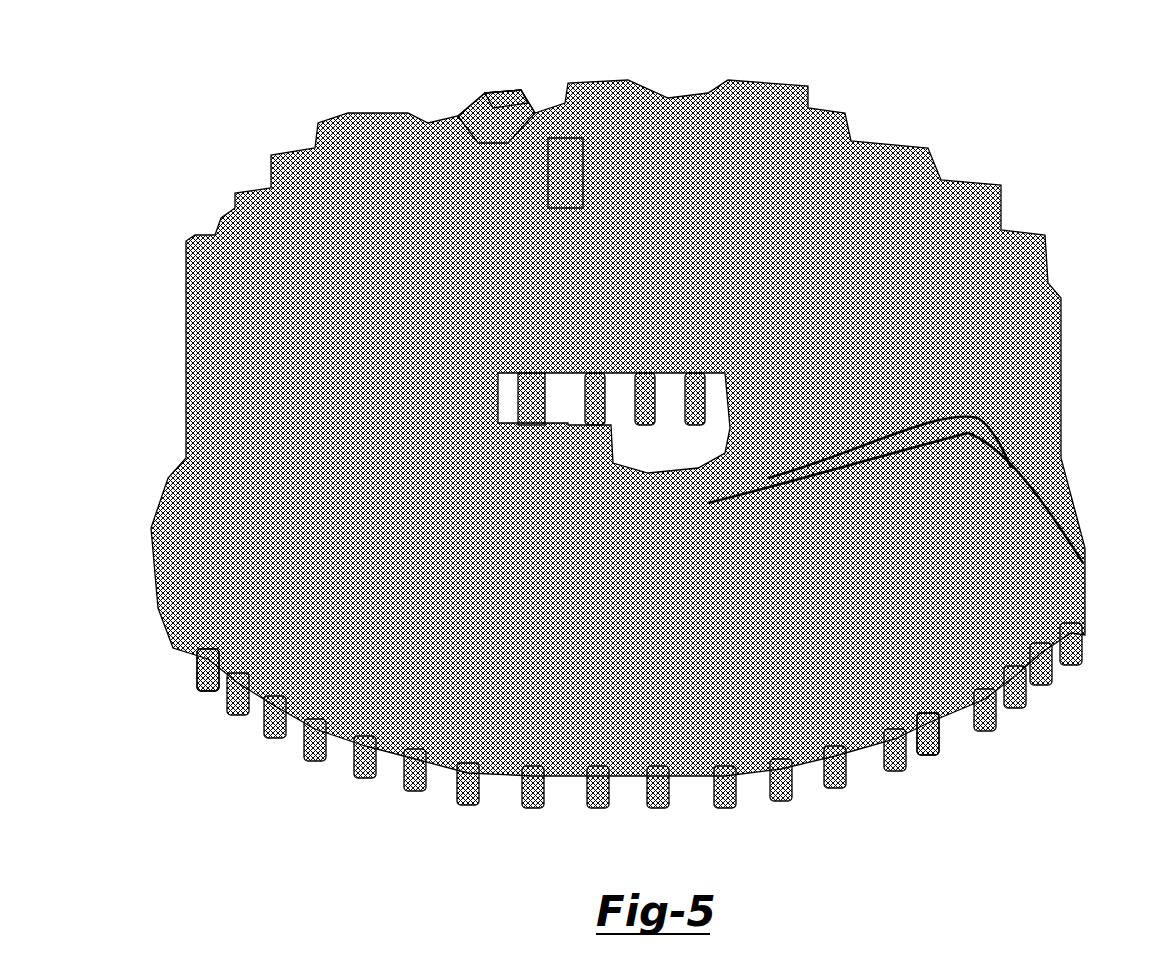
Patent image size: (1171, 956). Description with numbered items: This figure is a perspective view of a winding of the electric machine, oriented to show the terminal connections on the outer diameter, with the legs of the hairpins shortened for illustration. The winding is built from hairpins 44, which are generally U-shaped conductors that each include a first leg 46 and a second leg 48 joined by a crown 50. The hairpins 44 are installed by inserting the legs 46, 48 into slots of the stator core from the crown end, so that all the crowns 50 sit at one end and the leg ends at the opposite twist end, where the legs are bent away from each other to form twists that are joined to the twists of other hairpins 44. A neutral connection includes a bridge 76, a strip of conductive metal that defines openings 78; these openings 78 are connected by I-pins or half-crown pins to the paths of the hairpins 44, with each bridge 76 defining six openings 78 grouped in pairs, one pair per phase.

The hairpins 44 is at (178, 384).
The first leg 46 is at (487, 135).
The second leg 48 is at (555, 140).
The crown 50 is at (493, 80).
The bridge 76 is at (1003, 465).
The openings 78 is at (1003, 402).